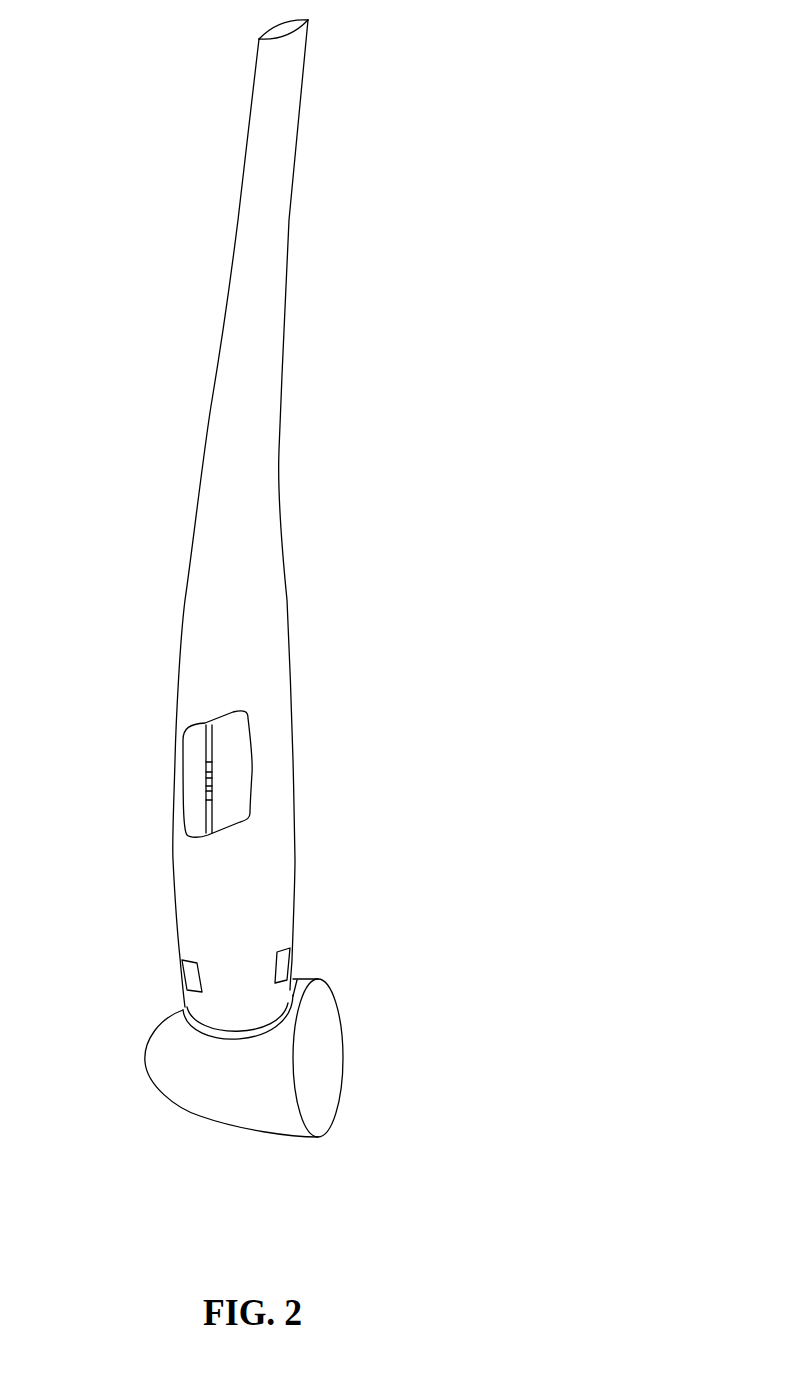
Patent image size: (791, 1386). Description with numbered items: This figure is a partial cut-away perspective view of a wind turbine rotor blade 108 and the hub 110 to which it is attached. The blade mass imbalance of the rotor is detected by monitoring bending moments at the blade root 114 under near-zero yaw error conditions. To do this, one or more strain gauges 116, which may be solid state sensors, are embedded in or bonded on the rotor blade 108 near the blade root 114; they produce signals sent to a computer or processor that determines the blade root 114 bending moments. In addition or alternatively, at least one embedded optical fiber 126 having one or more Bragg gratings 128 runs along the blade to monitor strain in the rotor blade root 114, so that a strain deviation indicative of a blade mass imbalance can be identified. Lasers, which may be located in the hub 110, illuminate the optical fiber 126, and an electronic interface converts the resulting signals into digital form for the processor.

The rotor blade 108 is at (331, 173).
The hub 110 is at (192, 1112).
The blade root 114 is at (290, 995).
The strain gauges 116 is at (182, 978).
The optical fiber 126 is at (215, 740).
The Bragg gratings 128 is at (213, 795).